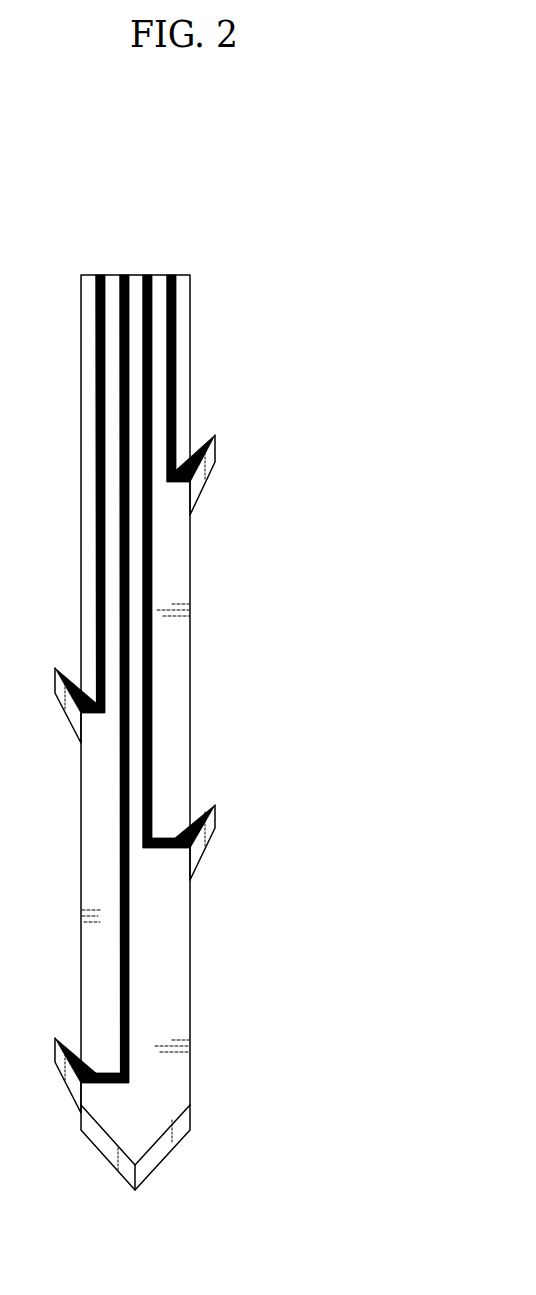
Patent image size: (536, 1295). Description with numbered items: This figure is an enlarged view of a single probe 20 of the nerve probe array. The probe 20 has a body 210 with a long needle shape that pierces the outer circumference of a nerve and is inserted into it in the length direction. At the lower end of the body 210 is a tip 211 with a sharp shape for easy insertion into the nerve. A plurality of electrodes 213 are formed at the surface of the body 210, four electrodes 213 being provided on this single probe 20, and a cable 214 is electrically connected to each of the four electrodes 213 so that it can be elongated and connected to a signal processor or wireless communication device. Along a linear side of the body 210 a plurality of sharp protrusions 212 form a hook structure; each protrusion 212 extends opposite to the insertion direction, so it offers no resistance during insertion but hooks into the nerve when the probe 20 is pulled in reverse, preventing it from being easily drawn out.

The probe 20 is at (295, 645).
The body 210 is at (183, 728).
The tip 211 is at (167, 1147).
The protrusion 212 is at (210, 472).
The electrode 213 is at (198, 440).
The cable 214 is at (175, 327).